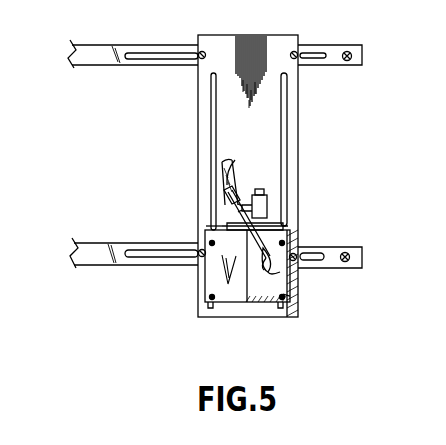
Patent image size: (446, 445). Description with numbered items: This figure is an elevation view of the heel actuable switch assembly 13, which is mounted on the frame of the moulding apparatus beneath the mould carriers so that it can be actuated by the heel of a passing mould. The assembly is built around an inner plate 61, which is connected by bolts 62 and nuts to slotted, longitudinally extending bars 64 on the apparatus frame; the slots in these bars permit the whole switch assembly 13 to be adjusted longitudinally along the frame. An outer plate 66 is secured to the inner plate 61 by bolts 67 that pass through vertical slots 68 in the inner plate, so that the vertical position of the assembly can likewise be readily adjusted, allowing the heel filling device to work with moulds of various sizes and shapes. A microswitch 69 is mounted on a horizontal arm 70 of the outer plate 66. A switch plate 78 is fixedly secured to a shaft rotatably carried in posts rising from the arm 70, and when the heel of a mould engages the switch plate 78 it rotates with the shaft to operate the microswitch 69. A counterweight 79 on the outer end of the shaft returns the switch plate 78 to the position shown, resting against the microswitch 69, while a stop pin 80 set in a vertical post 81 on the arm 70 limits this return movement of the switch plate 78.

The heel actuable switch assembly 13 is at (292, 237).
The inner plate 61 is at (293, 119).
The bolts 62 is at (300, 65).
The longitudinally extending bars 64 is at (114, 60).
The outer plate 66 is at (211, 284).
The bolts 67 is at (287, 297).
The vertical slots 68 is at (212, 105).
The microswitch 69 is at (290, 206).
The horizontal arm 70 is at (211, 228).
The switch plate 78 is at (222, 165).
The counterweight 79 is at (283, 273).
The stop pin 80 is at (235, 160).
The vertical post 81 is at (241, 199).